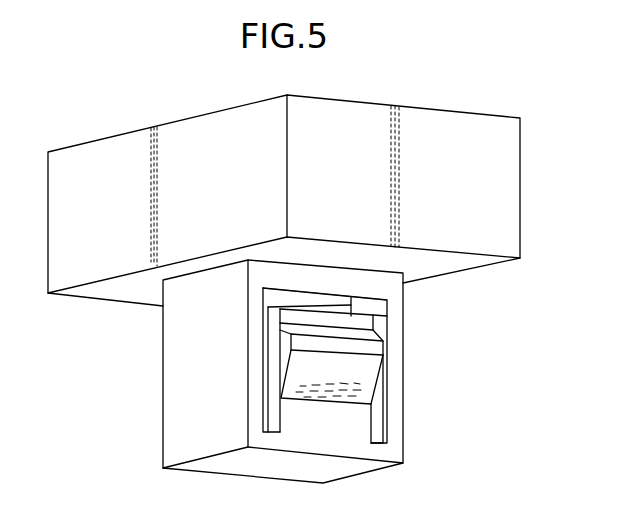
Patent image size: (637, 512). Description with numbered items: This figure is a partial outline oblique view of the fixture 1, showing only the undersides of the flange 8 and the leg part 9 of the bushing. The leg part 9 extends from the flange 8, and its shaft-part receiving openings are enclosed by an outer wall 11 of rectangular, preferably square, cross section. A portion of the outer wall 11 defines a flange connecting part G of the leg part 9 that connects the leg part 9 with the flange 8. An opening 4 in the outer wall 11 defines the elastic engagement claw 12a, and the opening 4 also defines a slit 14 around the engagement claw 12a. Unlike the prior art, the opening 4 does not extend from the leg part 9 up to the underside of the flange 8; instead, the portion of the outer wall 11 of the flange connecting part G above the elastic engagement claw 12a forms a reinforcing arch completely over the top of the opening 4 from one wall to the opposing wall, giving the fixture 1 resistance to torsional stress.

The fixture 1 is at (315, 289).
The flange 8 is at (95, 158).
The leg part 9 is at (284, 371).
The outer wall 11 is at (182, 412).
The flange connecting part G is at (352, 283).
The opening 4 is at (378, 312).
The elastic engagement claw 12a is at (383, 350).
The slit 14 is at (372, 427).